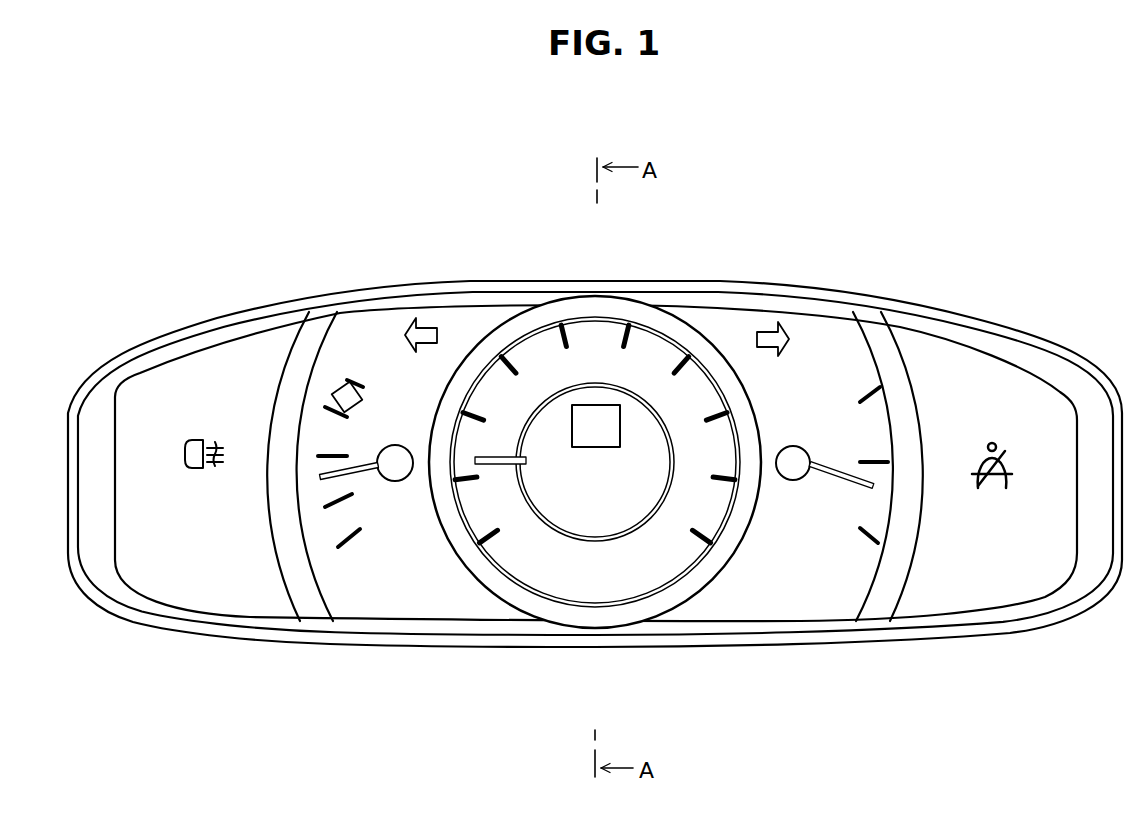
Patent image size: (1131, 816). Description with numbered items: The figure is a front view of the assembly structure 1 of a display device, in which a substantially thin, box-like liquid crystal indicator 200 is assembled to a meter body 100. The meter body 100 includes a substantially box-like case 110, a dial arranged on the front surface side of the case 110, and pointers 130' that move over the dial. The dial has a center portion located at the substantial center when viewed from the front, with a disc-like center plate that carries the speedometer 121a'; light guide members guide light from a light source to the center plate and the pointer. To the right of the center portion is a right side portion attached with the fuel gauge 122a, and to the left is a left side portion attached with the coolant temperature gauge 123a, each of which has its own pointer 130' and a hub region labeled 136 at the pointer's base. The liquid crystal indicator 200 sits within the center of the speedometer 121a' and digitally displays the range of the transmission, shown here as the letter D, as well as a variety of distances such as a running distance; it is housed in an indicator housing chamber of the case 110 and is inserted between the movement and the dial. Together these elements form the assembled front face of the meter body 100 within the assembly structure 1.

The assembly structure 1 is at (912, 162).
The meter body 100 is at (943, 297).
The case 110 is at (230, 298).
The speedometer 121a' is at (595, 429).
The fuel gauge 122a is at (856, 384).
The coolant temperature gauge 123a is at (354, 353).
The pointer 130' is at (597, 587).
The pointer hub 136 is at (363, 473).
The liquid crystal indicator 200 is at (645, 533).